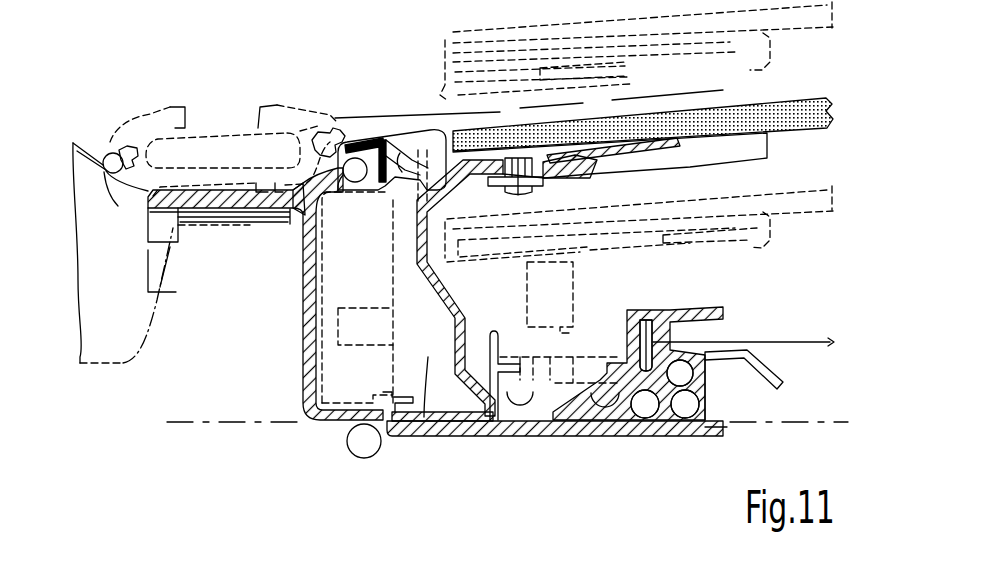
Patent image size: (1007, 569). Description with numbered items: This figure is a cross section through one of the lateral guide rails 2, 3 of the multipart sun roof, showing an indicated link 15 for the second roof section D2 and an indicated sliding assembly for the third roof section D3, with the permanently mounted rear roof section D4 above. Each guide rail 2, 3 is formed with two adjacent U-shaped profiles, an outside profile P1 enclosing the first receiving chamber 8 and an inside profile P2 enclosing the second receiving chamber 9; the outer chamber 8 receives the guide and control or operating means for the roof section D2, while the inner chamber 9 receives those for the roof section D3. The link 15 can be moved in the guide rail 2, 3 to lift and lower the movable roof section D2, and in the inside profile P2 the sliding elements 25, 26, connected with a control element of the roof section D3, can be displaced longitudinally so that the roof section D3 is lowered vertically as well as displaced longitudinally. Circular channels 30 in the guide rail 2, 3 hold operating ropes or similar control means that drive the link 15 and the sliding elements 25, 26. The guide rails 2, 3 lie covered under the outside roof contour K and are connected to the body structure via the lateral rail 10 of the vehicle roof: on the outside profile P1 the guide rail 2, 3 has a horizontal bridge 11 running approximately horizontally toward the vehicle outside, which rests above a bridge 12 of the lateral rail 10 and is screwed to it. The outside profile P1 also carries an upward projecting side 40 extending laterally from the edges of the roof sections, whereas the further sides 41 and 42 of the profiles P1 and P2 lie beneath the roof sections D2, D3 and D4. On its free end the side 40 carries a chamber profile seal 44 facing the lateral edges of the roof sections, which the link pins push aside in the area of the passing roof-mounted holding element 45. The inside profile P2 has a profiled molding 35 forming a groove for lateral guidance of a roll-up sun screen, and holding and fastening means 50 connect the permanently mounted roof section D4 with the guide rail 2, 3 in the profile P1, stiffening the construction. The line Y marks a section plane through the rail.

The guide rail 2 is at (555, 482).
The guide rail 3 is at (465, 438).
The receiving chamber 8 is at (420, 431).
The receiving chamber 9 is at (566, 403).
The lateral rail 10 is at (153, 322).
The horizontal bridge 11 is at (217, 200).
The bridge 12 is at (250, 220).
The link 15 is at (334, 364).
The sliding element 25 is at (653, 439).
The sliding element 26 is at (665, 389).
The circular channel 30 is at (360, 150).
The profiled molding 35 is at (649, 316).
The upward projecting side 40 is at (308, 313).
The side 41 is at (491, 332).
The side 42 is at (620, 331).
The chamber profile seal 44 is at (412, 192).
The holding element 45 is at (443, 106).
The holding and fastening means 50 is at (445, 300).
The outside roof contour K is at (348, 125).
The axis Y is at (511, 423).
The outside profile P1 is at (328, 413).
The inside profile P2 is at (545, 378).
The roof section D2 is at (822, 15).
The roof section D3 is at (822, 197).
The rear roof section D4 is at (832, 110).